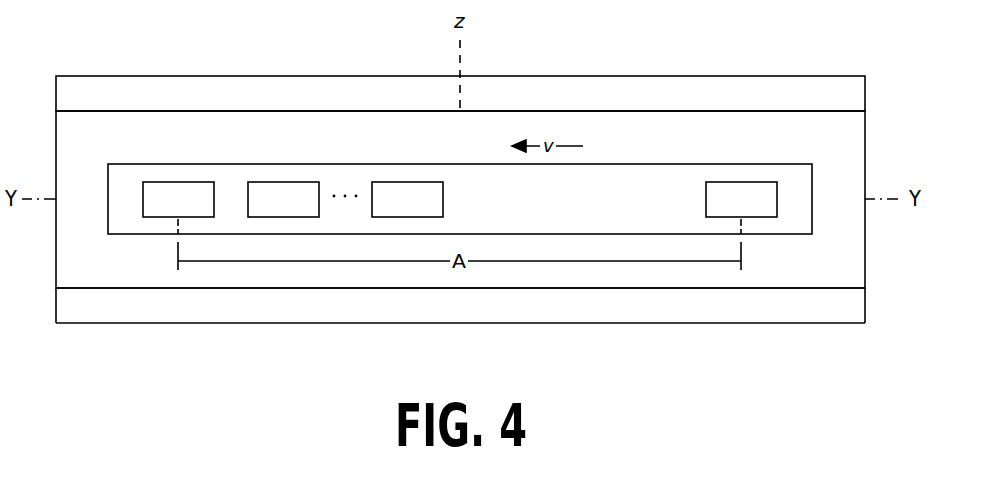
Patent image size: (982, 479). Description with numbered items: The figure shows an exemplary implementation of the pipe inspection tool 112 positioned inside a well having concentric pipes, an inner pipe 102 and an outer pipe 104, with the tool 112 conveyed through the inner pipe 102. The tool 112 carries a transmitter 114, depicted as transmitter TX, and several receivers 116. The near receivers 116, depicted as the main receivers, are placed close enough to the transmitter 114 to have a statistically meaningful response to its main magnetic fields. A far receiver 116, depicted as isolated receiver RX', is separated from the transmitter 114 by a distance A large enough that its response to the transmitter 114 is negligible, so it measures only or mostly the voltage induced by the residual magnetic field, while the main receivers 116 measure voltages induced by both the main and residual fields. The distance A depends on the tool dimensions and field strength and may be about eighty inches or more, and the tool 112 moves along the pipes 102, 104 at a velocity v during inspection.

The inner pipe 102 is at (143, 111).
The outer pipe 104 is at (143, 76).
The pipe inspection tool 112 is at (143, 164).
The transmitter 114 is at (178, 182).
The receiver 116 is at (280, 182).